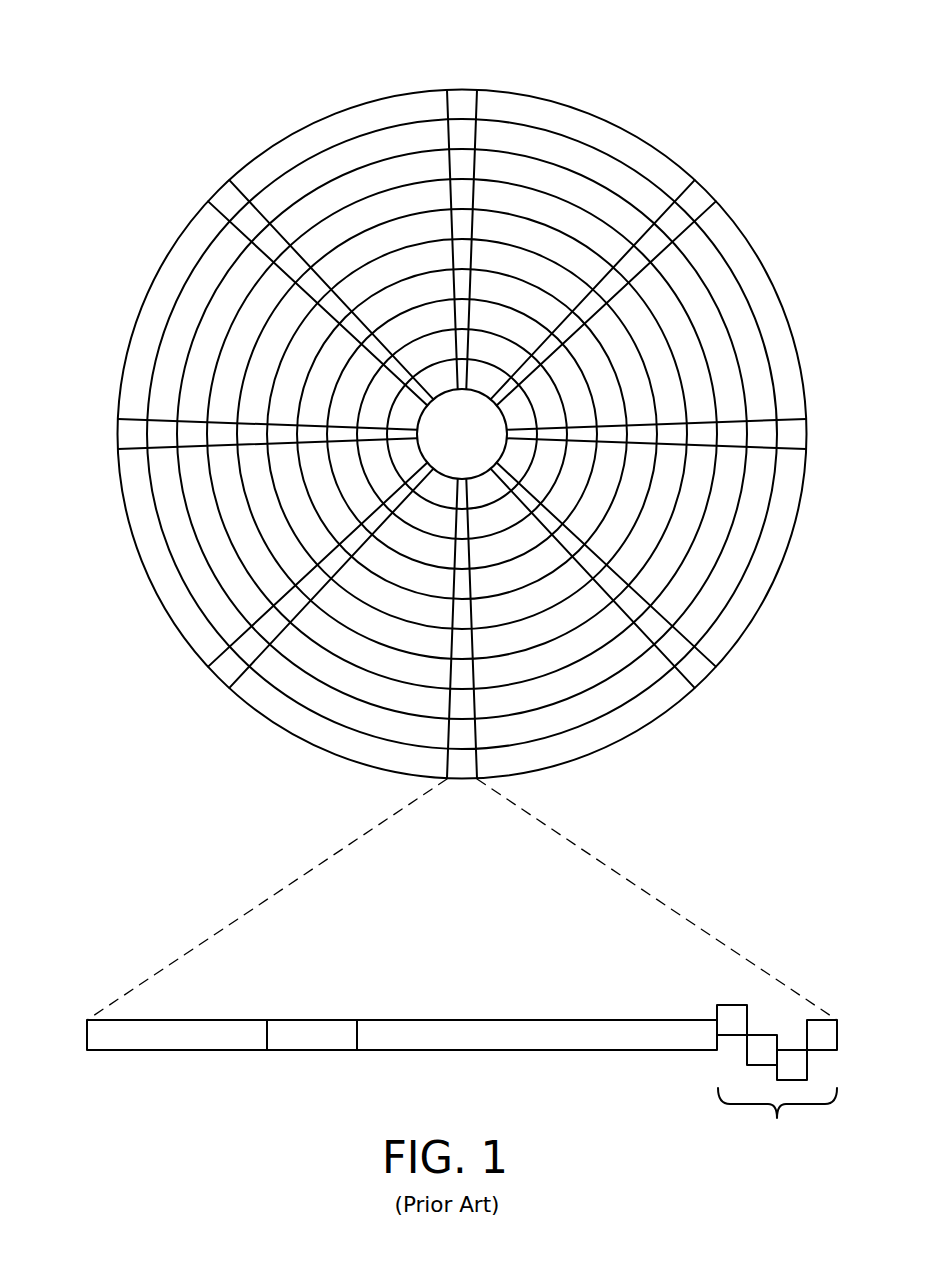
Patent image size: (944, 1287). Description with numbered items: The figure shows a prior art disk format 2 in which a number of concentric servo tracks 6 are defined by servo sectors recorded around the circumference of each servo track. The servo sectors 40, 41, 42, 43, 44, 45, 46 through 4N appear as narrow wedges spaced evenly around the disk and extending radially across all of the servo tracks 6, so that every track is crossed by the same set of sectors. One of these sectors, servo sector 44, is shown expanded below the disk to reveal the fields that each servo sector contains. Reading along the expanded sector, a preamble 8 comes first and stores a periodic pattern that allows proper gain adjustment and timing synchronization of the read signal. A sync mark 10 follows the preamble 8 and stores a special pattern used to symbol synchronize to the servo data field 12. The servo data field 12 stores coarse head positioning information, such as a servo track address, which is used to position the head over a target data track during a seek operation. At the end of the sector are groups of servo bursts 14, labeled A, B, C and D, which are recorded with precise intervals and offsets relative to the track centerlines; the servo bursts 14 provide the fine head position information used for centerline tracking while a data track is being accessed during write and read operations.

The disk format 2 is at (200, 90).
The servo tracks 6 is at (603, 141).
The servo sector 40 is at (464, 102).
The servo sector 41 is at (697, 203).
The servo sector 42 is at (798, 437).
The servo sector 43 is at (697, 672).
The servo sector 44 is at (304, 855).
The servo sector 45 is at (222, 673).
The servo sector 46 is at (124, 433).
The servo sector 4N is at (226, 198).
The preamble 8 is at (157, 1053).
The sync mark 10 is at (310, 1053).
The servo data field 12 is at (523, 1053).
The servo bursts 14 is at (697, 980).